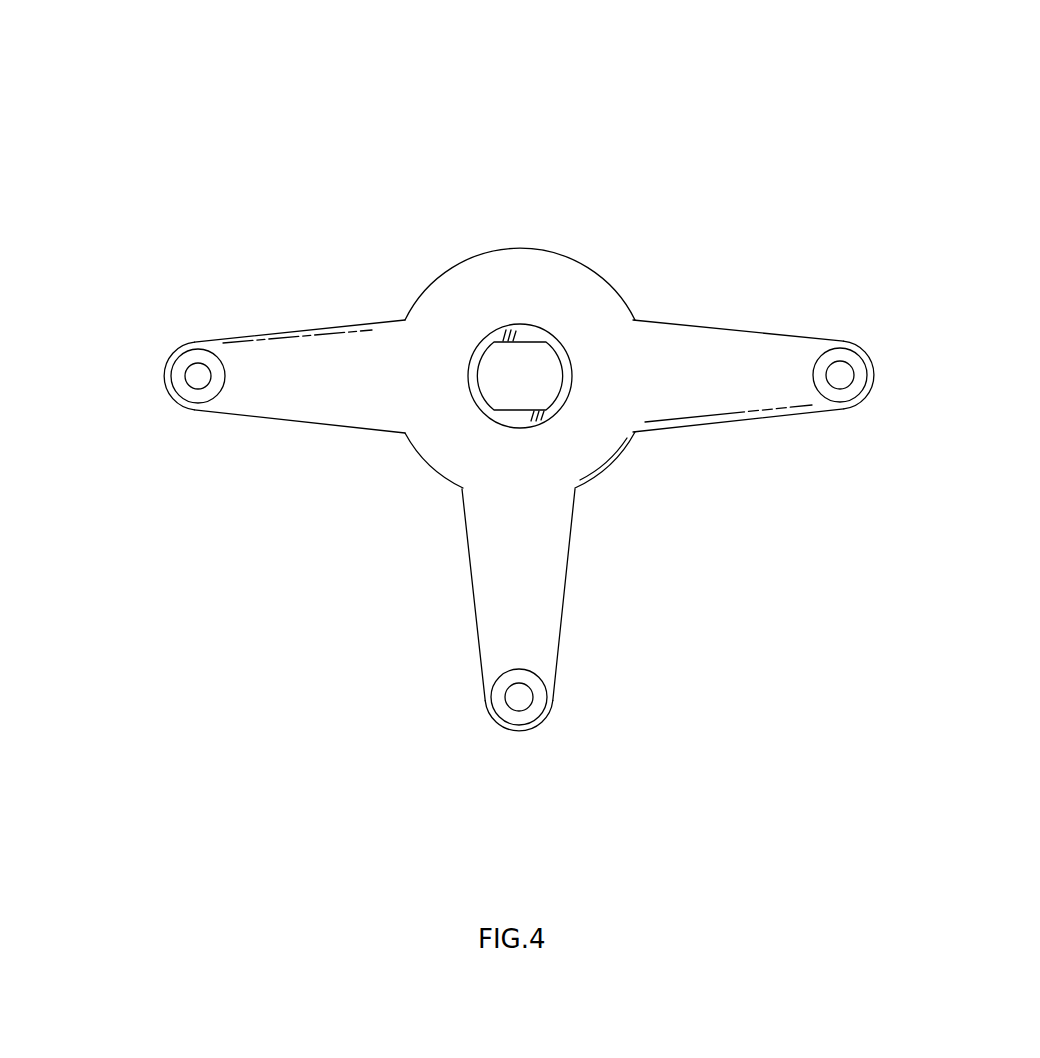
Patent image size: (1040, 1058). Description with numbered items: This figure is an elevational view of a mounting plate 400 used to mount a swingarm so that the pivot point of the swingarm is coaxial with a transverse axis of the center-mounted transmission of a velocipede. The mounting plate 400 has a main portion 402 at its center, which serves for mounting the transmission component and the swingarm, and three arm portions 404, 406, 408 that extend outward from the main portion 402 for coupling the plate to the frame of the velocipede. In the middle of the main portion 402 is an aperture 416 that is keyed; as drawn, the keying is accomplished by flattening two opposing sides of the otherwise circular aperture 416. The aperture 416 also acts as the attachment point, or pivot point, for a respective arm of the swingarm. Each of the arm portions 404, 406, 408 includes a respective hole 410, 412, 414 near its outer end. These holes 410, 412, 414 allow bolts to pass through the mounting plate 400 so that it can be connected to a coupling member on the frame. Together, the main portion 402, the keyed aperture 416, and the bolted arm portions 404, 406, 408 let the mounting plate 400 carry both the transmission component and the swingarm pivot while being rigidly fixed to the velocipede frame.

The mounting plate 400 is at (881, 58).
The main portion 402 is at (447, 270).
The arm portion 404 is at (240, 337).
The arm portion 406 is at (755, 423).
The arm portion 408 is at (562, 633).
The hole 410 is at (195, 373).
The hole 412 is at (852, 377).
The hole 414 is at (517, 708).
The aperture 416 is at (555, 333).